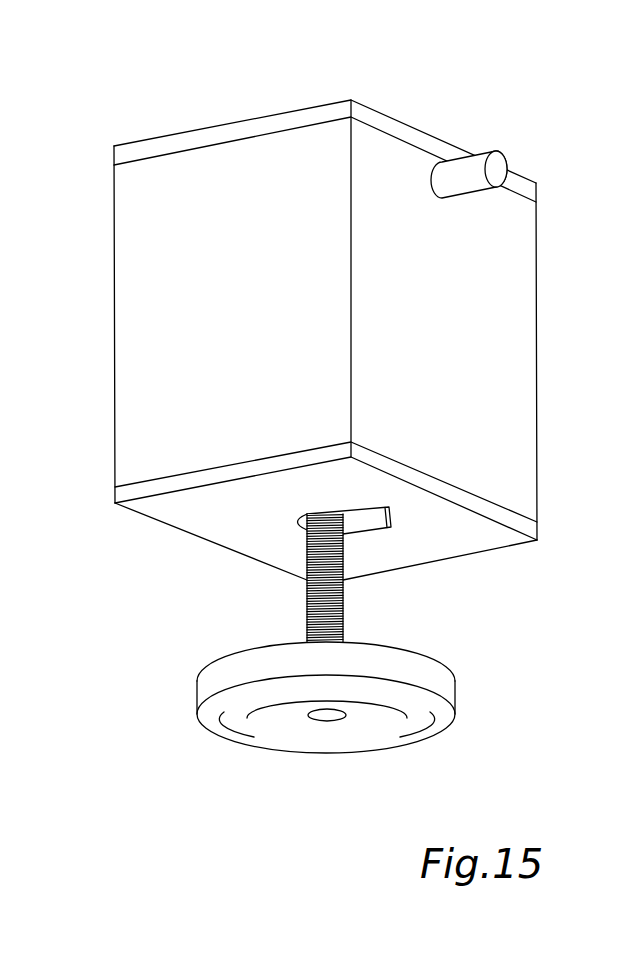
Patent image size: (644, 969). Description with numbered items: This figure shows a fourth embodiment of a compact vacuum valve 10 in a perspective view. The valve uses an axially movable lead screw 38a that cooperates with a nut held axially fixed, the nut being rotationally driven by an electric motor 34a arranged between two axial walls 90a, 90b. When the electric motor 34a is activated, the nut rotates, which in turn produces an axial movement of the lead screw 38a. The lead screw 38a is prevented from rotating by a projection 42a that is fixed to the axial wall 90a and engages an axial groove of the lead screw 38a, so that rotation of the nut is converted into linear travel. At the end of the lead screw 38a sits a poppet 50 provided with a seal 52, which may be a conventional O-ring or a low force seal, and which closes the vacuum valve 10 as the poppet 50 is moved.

The vacuum valve 10 is at (346, 311).
The axial wall 90b is at (228, 134).
The electric motor 34a is at (495, 339).
The axial wall 90a is at (215, 512).
The projection 42a is at (367, 525).
The lead screw 38a is at (306, 592).
The poppet 50 is at (447, 690).
The seal 52 is at (247, 728).